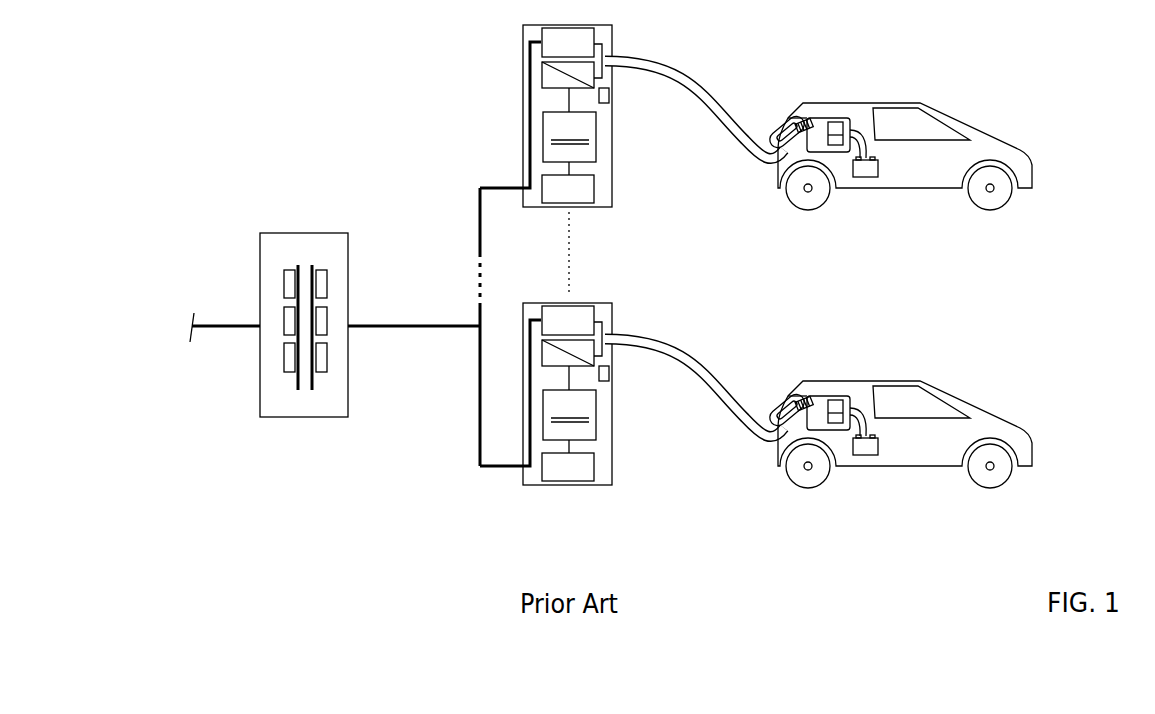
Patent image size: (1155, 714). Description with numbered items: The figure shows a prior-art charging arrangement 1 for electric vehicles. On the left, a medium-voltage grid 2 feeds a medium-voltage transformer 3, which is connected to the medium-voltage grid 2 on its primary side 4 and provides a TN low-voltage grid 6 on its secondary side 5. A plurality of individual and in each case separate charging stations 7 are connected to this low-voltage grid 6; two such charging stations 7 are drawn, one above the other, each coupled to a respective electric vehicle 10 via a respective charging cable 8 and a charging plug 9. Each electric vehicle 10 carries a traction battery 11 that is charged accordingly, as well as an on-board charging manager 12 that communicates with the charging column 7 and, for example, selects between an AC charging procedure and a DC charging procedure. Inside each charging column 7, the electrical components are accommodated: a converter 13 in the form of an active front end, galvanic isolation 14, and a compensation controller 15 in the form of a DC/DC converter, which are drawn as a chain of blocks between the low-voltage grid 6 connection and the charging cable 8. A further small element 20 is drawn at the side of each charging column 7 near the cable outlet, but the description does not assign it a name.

The charging arrangement 1 is at (233, 212).
The medium-voltage grid 2 is at (200, 304).
The medium-voltage transformer 3 is at (322, 243).
The primary side 4 is at (276, 311).
The secondary side 5 is at (333, 309).
The TN low-voltage grid 6 is at (386, 331).
The charging station 7 is at (612, 200).
The charging cable 8 is at (708, 97).
The charging plug 9 is at (788, 120).
The electric vehicle 10 is at (978, 123).
The traction battery 11 is at (867, 170).
The on-board charging manager 12 is at (848, 122).
The converter 13 is at (590, 188).
The galvanic isolation 14 is at (590, 155).
The compensation controller 15 is at (572, 82).
The communication module 20 is at (612, 97).